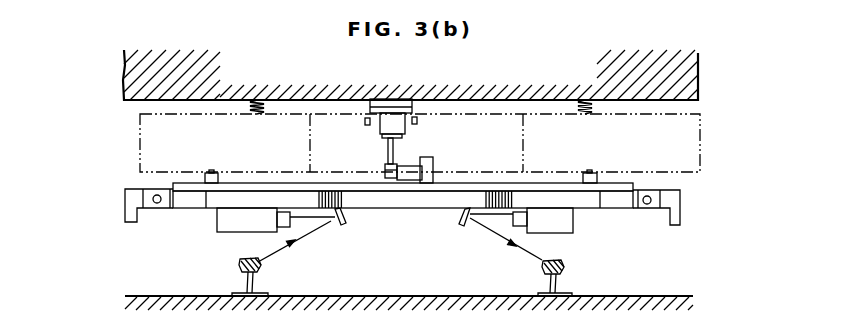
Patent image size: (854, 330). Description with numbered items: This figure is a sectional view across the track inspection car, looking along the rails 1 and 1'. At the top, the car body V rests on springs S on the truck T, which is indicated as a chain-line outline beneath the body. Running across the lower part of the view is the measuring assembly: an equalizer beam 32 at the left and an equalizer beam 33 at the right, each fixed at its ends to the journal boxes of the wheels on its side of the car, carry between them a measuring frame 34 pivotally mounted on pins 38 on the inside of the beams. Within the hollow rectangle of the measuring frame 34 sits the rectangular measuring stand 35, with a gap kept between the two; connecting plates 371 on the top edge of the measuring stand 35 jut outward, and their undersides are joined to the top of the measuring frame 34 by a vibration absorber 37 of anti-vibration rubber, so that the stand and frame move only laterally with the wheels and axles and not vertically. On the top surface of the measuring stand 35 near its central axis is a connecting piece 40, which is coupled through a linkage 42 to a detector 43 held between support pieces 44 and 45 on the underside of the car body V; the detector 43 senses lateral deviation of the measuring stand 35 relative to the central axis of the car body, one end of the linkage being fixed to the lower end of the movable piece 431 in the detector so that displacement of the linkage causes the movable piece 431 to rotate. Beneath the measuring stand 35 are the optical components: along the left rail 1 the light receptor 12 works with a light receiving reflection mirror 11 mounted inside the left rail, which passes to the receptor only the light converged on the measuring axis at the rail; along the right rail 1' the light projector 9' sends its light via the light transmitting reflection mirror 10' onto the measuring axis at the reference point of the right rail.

The car body V is at (700, 74).
The springs S is at (590, 112).
The truck T is at (700, 161).
The detector 43 is at (393, 99).
The support piece 45 is at (421, 99).
The support piece 44 is at (368, 124).
The movable piece 431 is at (386, 153).
The connecting piece 40 is at (427, 172).
The linkage 42 is at (403, 186).
The measuring stand 35 is at (545, 183).
The vibration absorber 37 is at (207, 176).
The connecting plate 371 is at (218, 176).
The measuring frame 34 is at (616, 209).
The equalizer beam 32 is at (125, 201).
The equalizer beam 33 is at (681, 200).
The pin 38 is at (651, 208).
The light receptor 12 is at (222, 218).
The light projector 9' is at (538, 229).
The light receiving reflection mirror 11 is at (343, 228).
The light transmitting reflection mirror 10' is at (491, 236).
The rail 1 is at (235, 277).
The rail 1' is at (574, 278).